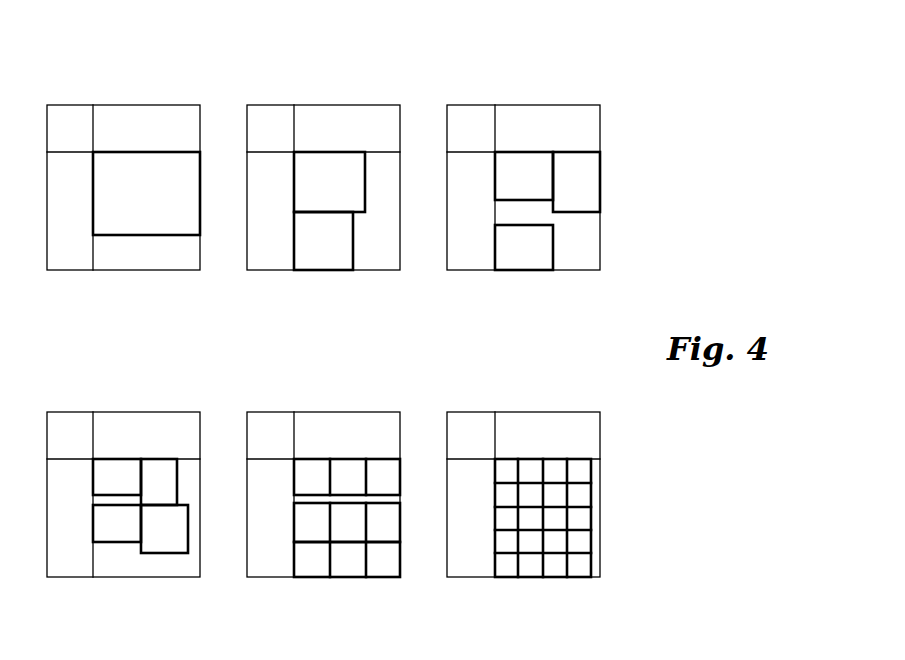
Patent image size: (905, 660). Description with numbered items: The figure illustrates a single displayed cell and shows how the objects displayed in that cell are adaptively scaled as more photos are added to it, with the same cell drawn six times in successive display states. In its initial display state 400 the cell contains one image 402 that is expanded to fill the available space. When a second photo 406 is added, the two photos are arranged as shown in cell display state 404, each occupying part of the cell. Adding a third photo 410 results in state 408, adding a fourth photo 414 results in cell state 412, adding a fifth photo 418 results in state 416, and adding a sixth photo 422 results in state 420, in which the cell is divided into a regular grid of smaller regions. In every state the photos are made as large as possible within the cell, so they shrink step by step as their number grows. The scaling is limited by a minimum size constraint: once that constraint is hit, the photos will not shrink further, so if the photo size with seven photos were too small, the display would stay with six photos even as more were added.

The initial display state 400 is at (83, 103).
The image 402 is at (117, 212).
The cell display state 404 is at (271, 103).
The second photo 406 is at (330, 258).
The state 408 is at (463, 103).
The third photo 410 is at (518, 255).
The cell state 412 is at (70, 410).
The fourth photo 414 is at (163, 547).
The state 416 is at (260, 410).
The fifth photo 418 is at (350, 567).
The state 420 is at (450, 410).
The sixth photo 422 is at (553, 567).